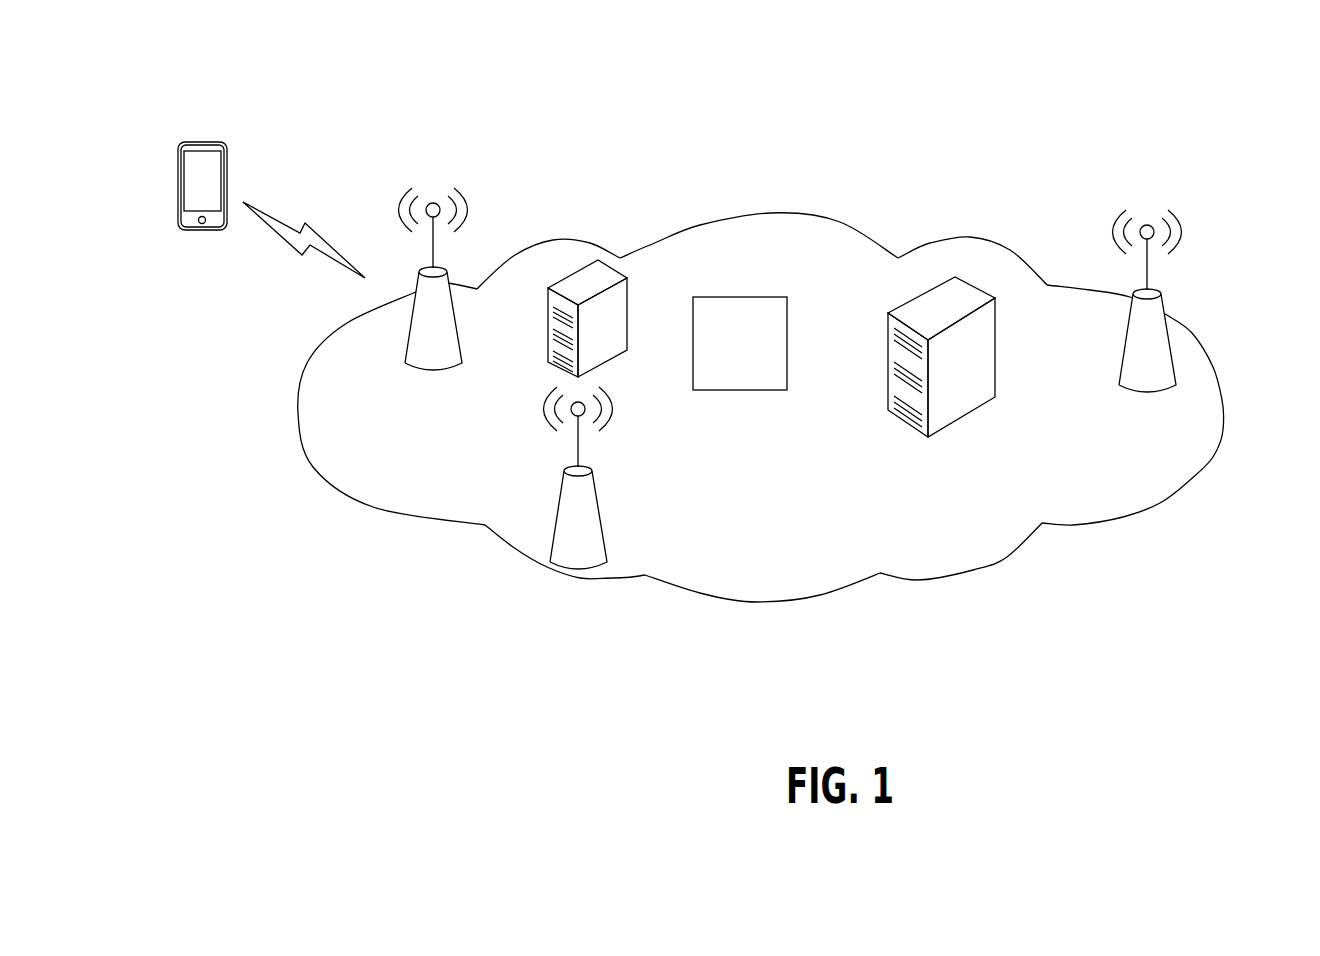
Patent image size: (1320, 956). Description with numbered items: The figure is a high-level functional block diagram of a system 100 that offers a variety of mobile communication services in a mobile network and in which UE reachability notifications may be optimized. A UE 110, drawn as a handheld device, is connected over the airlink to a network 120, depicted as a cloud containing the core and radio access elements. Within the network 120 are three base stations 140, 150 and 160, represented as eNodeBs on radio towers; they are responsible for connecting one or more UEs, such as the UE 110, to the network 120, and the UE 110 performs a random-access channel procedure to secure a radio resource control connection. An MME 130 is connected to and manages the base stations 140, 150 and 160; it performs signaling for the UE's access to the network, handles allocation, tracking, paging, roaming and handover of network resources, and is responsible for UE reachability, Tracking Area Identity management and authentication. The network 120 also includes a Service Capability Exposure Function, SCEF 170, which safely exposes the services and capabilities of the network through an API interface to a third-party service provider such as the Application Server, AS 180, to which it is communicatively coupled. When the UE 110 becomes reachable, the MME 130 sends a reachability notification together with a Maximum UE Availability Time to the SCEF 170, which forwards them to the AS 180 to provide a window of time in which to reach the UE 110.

The system 100 is at (299, 90).
The UE 110 is at (202, 140).
The network 120 is at (760, 213).
The MME 130 is at (577, 274).
The base station 140 is at (405, 348).
The base station 150 is at (557, 515).
The base station 160 is at (1172, 347).
The Service Capability Exposure Function (SCEF) 170 is at (760, 297).
The Application Server (AS) 180 is at (998, 364).